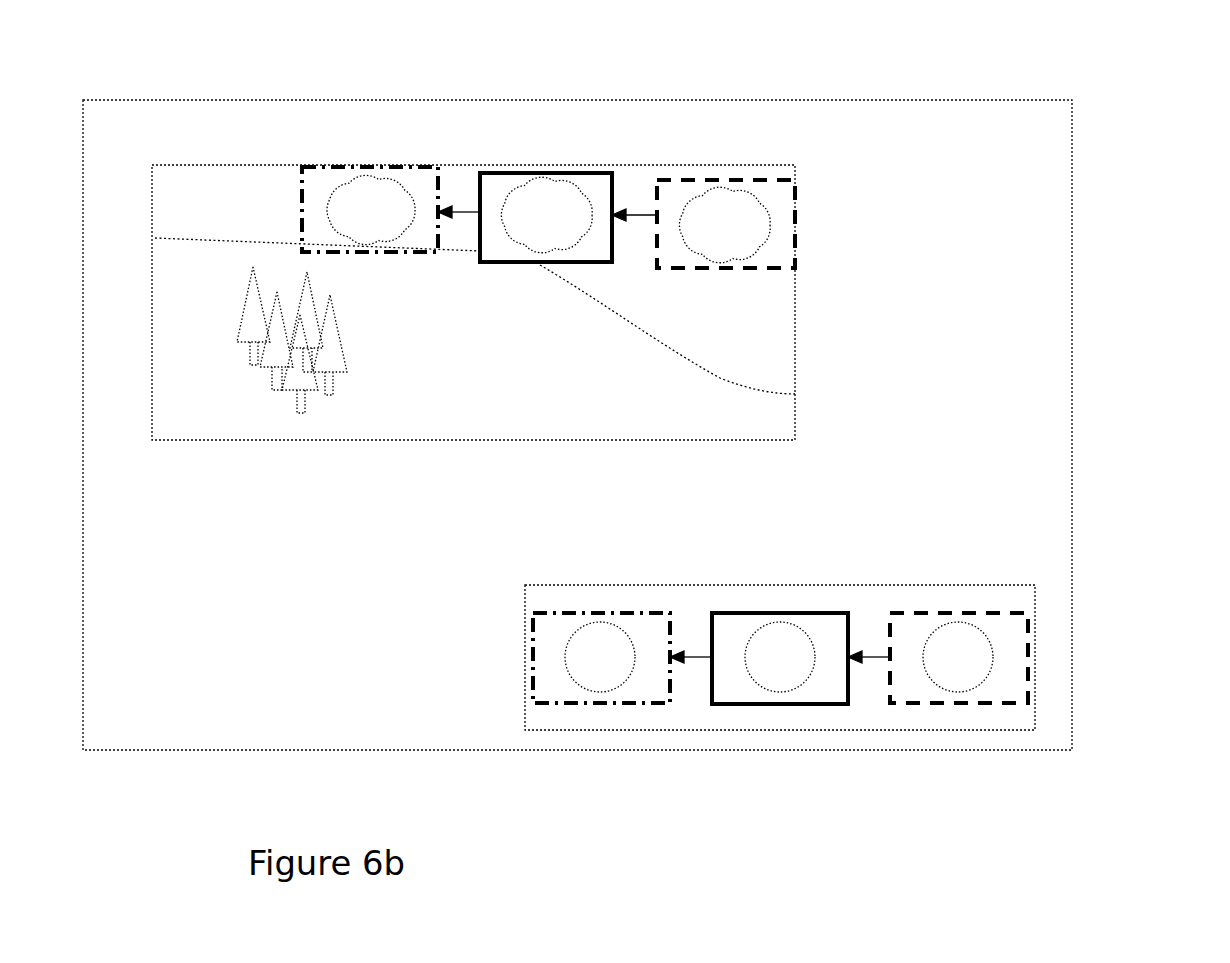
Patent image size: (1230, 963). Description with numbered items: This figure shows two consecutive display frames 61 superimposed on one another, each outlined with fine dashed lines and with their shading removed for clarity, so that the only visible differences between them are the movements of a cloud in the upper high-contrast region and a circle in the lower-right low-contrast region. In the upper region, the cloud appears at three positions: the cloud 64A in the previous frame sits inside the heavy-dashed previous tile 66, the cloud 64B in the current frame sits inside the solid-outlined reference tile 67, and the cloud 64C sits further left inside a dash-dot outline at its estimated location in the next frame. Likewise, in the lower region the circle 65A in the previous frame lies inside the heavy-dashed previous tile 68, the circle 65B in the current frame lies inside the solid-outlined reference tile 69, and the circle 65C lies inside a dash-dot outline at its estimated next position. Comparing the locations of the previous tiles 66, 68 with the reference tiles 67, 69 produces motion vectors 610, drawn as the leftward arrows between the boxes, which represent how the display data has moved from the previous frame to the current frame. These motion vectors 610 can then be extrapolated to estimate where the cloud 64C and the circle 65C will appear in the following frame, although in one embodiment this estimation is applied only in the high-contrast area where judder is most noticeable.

The frames 61 is at (1068, 426).
The cloud in previous frame 64A is at (722, 195).
The cloud in current frame 64B is at (548, 185).
The estimated cloud location 64C is at (370, 180).
The motion vectors 610 is at (637, 212).
The reference tile for cloud 67 is at (478, 210).
The previous tile for cloud 66 is at (796, 210).
The circle in previous frame 65A is at (995, 660).
The circle in current frame 65B is at (807, 685).
The estimated circle location 65C is at (603, 693).
The reference tile for circle 69 is at (778, 705).
The previous tile for circle 68 is at (958, 702).